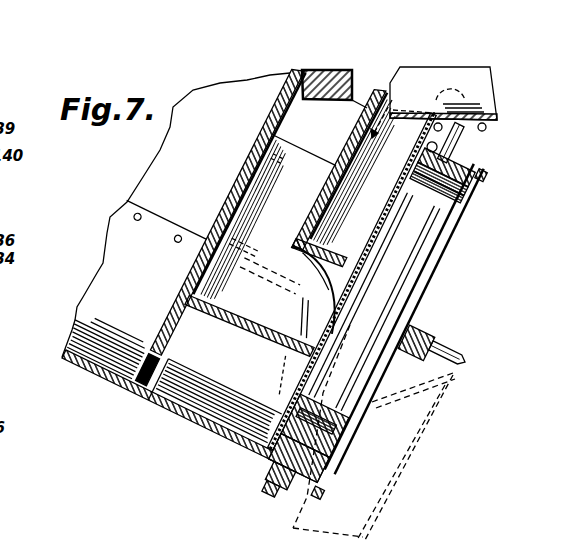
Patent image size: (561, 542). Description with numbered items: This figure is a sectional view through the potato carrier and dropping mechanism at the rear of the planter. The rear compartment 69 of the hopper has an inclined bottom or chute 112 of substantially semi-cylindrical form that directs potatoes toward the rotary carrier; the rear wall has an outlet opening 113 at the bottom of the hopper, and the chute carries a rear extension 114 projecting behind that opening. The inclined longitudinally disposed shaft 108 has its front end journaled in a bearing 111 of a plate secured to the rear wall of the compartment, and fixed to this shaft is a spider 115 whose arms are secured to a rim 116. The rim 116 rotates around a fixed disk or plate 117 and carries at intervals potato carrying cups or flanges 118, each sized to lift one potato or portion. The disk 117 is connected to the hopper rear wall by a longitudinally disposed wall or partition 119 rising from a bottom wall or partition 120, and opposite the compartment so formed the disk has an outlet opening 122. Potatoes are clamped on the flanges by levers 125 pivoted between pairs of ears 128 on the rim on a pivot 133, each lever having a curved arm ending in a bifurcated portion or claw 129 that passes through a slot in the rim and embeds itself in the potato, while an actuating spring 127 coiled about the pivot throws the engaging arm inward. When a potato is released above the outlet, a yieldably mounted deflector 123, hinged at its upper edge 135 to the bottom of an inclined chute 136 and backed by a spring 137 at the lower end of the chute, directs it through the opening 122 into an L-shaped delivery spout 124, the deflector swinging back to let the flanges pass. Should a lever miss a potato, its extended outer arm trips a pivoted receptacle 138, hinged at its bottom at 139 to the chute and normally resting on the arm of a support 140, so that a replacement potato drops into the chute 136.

The rear compartment 69 is at (228, 211).
The inclined longitudinally disposed shaft 108 is at (457, 363).
The bearing 111 is at (243, 245).
The inclined bottom or chute 112 is at (136, 292).
The outlet opening 113 is at (160, 367).
The rear extension 114 is at (214, 410).
The spider 115 is at (358, 423).
The rim 116 is at (470, 185).
The fixed disk or plate 117 is at (463, 220).
The potato carrying cups or flanges 118 is at (463, 198).
The longitudinally disposed wall or partition 119 is at (266, 229).
The bottom wall or partition 120 is at (227, 371).
The outlet opening 122 is at (398, 406).
The yieldably mounted deflector 123 is at (415, 316).
The L-shaped delivery spout 124 is at (380, 518).
The levers 125 is at (460, 143).
The actuating spring 127 is at (277, 490).
The ears 128 is at (432, 148).
The bifurcated portion or claw 129 is at (430, 180).
The pivot 133 is at (483, 175).
The upper edge 135 is at (300, 288).
The inclined chute 136 is at (356, 177).
The spring 137 is at (312, 306).
The pivoted receptacle 138 is at (497, 78).
The hinge or pivot 139 is at (438, 101).
The support 140 is at (487, 132).